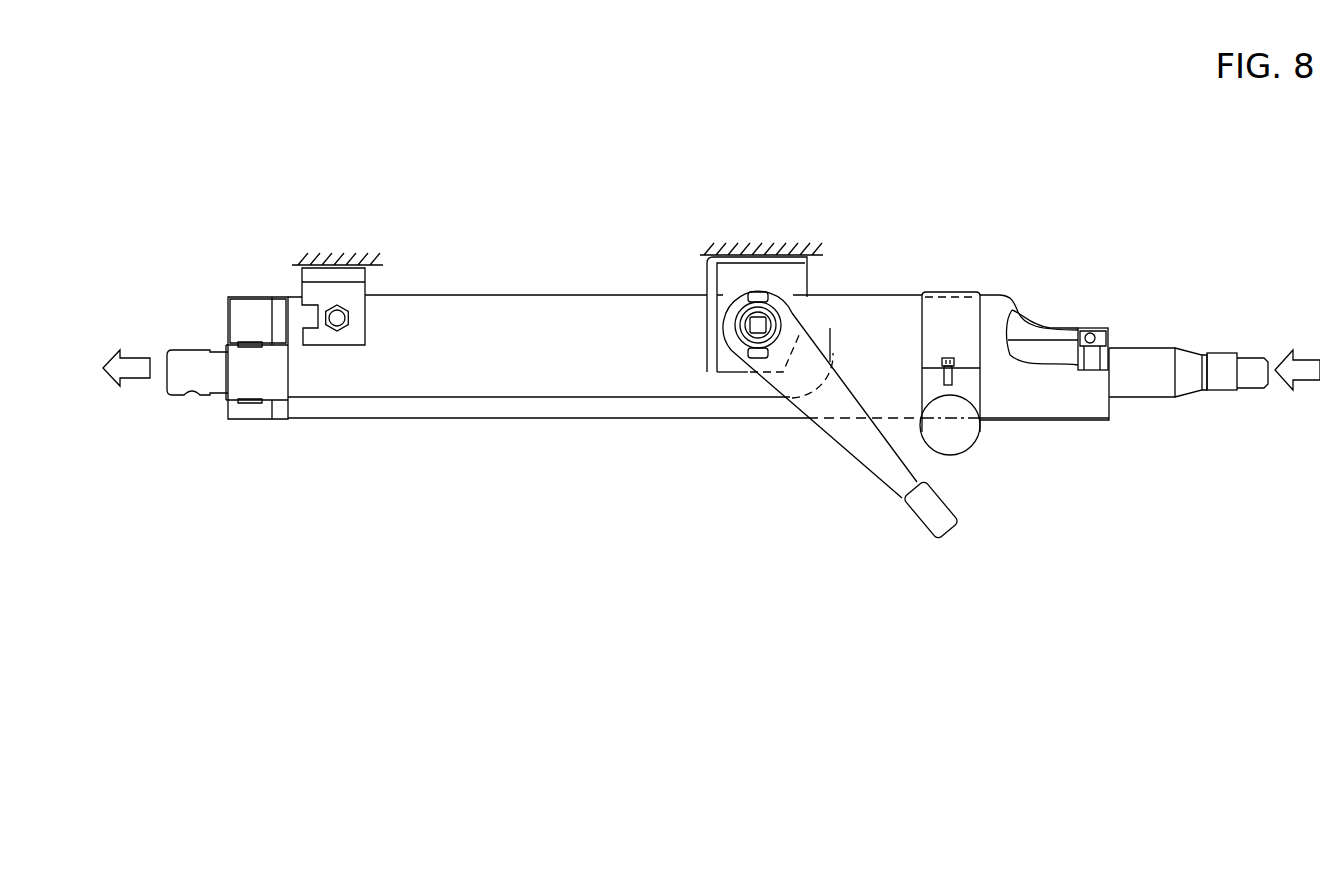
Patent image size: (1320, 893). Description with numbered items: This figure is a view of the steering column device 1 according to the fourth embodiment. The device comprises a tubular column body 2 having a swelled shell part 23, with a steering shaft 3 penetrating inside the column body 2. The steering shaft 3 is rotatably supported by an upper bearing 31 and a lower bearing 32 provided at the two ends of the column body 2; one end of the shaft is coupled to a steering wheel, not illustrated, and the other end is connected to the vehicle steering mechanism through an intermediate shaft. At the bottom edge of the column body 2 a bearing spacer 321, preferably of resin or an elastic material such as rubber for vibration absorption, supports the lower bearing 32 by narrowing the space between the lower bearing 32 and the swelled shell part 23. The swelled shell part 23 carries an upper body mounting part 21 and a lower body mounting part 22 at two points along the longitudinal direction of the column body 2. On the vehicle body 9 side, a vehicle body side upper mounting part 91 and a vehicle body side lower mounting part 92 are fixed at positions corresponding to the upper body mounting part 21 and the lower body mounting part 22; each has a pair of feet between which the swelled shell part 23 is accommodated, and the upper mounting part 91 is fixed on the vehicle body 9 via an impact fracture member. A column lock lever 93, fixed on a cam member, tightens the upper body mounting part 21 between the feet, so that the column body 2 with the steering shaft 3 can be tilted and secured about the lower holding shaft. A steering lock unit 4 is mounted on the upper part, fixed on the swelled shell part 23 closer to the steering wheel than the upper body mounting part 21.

The steering column device 1 is at (629, 128).
The column body 2 is at (524, 406).
The steering shaft 3 is at (1156, 392).
The steering lock unit 4 is at (958, 469).
The vehicle body 9 is at (333, 246).
The upper body mounting part 21 is at (796, 310).
The lower body mounting part 22 is at (358, 331).
The swelled shell part 23 is at (441, 296).
The upper bearing 31 is at (1108, 332).
The lower bearing 32 is at (250, 342).
The vehicle body side upper mounting part 91 is at (814, 281).
The vehicle body side lower mounting part 92 is at (378, 288).
The column lock lever 93 is at (886, 479).
The bearing spacer 321 is at (250, 306).